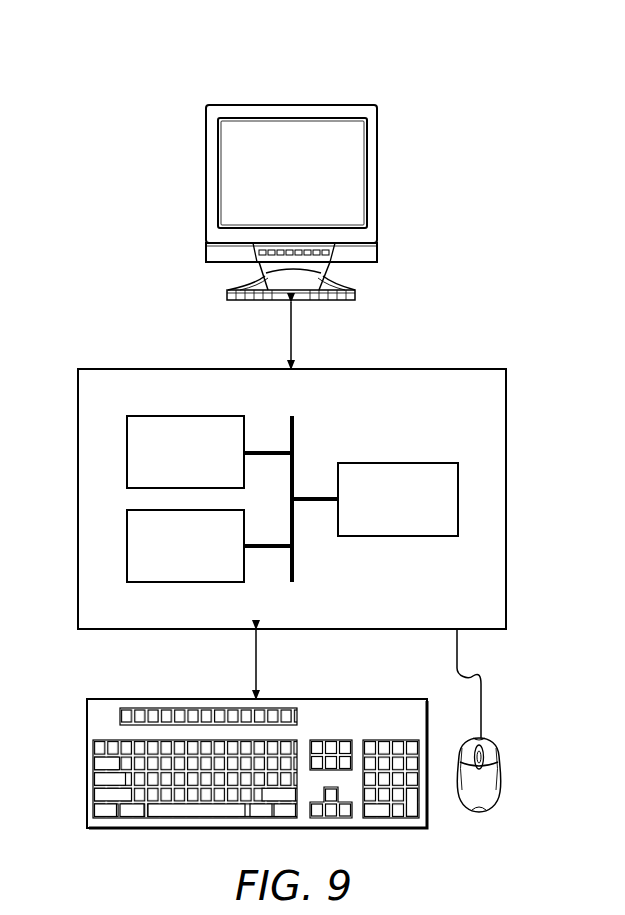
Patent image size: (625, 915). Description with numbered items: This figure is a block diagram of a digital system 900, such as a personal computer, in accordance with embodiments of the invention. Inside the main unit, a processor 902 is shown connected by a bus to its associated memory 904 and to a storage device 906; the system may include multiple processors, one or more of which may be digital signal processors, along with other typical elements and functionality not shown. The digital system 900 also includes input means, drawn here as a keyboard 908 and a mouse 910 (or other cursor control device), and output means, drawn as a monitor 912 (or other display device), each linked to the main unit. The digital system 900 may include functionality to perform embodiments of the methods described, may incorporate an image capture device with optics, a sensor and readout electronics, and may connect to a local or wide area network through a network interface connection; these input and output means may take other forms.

The digital system 900 is at (447, 82).
The processor 902 is at (419, 514).
The memory 904 is at (205, 467).
The storage device 906 is at (205, 561).
The keyboard 908 is at (87, 766).
The mouse 910 is at (498, 773).
The monitor 912 is at (206, 172).